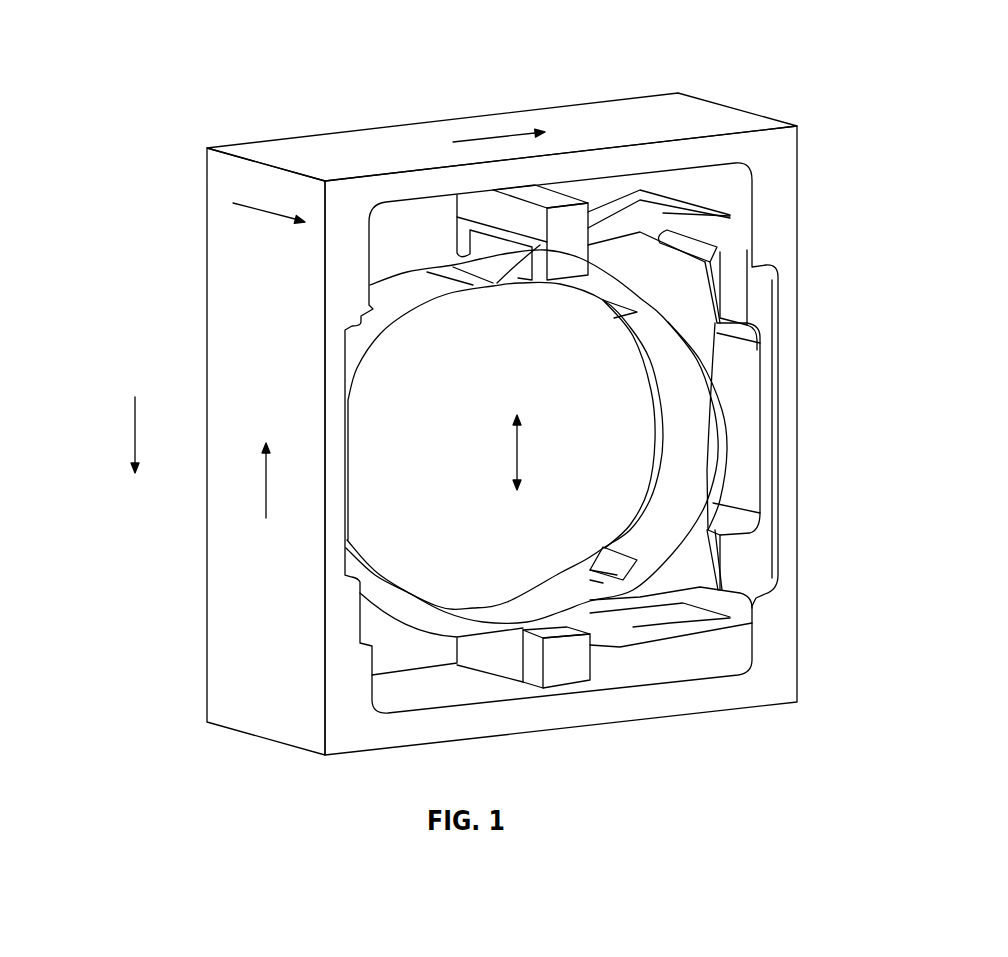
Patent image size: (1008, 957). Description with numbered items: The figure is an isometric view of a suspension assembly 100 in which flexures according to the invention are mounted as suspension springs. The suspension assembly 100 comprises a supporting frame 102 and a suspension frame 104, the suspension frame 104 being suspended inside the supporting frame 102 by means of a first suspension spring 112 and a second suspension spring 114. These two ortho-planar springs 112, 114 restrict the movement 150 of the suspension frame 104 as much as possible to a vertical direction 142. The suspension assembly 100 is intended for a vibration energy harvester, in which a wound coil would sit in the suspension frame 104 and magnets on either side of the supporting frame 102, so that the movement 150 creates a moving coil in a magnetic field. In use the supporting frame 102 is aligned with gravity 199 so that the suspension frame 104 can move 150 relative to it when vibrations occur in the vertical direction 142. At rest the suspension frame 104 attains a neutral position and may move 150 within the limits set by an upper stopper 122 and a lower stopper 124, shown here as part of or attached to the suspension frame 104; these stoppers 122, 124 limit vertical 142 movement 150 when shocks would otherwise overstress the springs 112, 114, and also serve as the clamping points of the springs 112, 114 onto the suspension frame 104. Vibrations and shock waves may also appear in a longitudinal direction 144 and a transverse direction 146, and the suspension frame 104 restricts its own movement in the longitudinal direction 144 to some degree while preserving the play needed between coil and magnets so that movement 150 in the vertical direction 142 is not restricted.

The suspension assembly 100 is at (782, 45).
The supporting frame 102 is at (785, 152).
The suspension frame 104 is at (685, 553).
The first suspension spring 112 is at (722, 222).
The second suspension spring 114 is at (687, 608).
The upper stopper 122 is at (565, 220).
The lower stopper 124 is at (565, 672).
The vertical direction 142 is at (263, 495).
The longitudinal direction 144 is at (233, 203).
The transverse direction 146 is at (502, 135).
The direction of suspension frame movement 150 is at (517, 452).
The gravity 199 is at (132, 438).